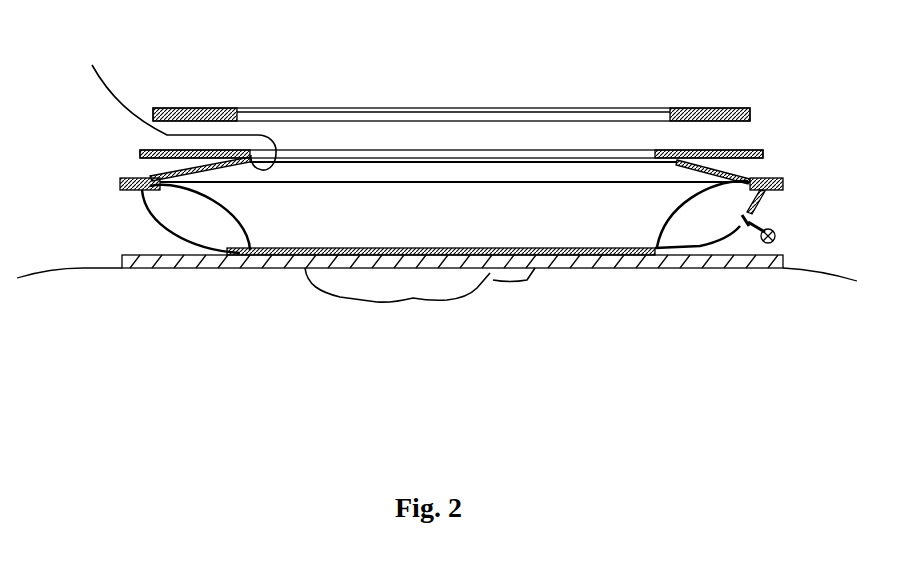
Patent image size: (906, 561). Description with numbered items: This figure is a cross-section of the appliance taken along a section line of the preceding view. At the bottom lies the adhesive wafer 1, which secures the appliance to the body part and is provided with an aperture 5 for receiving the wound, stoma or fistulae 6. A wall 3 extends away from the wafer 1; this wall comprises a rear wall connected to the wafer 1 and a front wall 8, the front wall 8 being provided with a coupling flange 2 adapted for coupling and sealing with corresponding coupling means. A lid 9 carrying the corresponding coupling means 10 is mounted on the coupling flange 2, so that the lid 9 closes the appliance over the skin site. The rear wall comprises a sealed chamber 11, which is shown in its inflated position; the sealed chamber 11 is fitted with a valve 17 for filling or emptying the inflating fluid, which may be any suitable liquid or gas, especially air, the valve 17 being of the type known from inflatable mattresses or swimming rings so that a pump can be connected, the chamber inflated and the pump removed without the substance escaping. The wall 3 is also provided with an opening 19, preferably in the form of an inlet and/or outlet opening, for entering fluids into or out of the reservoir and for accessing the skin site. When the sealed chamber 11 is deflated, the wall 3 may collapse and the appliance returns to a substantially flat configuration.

The adhesive wafer 1 is at (718, 262).
The coupling flange 2 is at (748, 148).
The wall 3 is at (140, 210).
The aperture 5 is at (468, 262).
The wound, stoma or fistulae 6 is at (380, 283).
The front wall 8 is at (757, 170).
The lid 9 is at (713, 105).
The coupling means 10 is at (748, 113).
The sealed chamber 11 is at (193, 217).
The valve 17 is at (757, 221).
The opening 19 is at (169, 91).